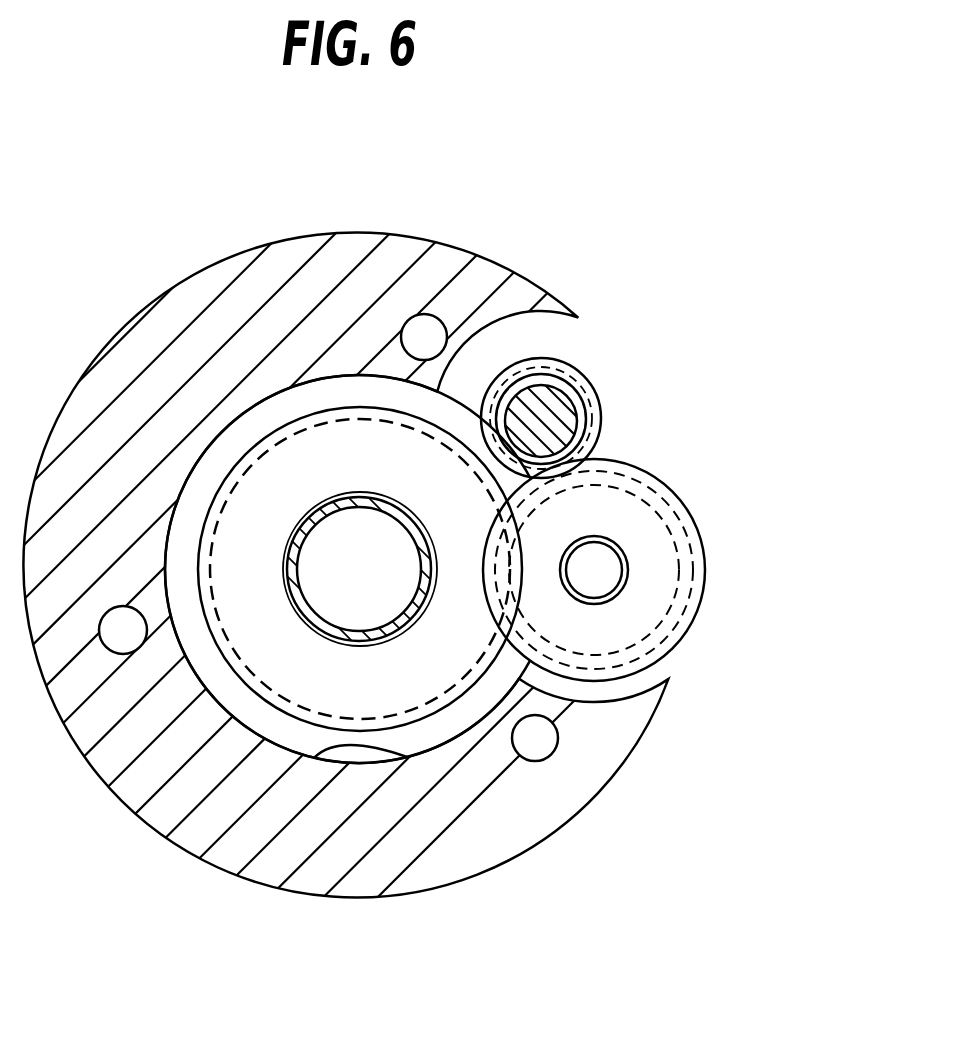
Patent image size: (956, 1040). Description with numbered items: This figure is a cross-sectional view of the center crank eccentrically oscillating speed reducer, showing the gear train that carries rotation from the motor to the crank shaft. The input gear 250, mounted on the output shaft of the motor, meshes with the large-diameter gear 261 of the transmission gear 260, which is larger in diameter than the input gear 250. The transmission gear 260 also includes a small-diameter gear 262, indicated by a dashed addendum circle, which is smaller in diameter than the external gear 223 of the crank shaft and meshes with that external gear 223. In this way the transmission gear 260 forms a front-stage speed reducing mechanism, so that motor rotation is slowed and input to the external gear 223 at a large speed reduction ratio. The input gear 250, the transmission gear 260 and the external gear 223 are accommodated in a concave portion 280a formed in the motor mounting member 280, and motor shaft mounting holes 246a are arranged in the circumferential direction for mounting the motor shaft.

The external gear 223 is at (232, 672).
The motor shaft mounting holes 246a is at (490, 283).
The input gear 250 is at (578, 372).
The transmission gear 260 is at (635, 555).
The large-diameter gear 261 is at (692, 517).
The small-diameter gear 262 is at (688, 612).
The motor mounting member 280 is at (230, 367).
The concave portion 280a is at (378, 758).